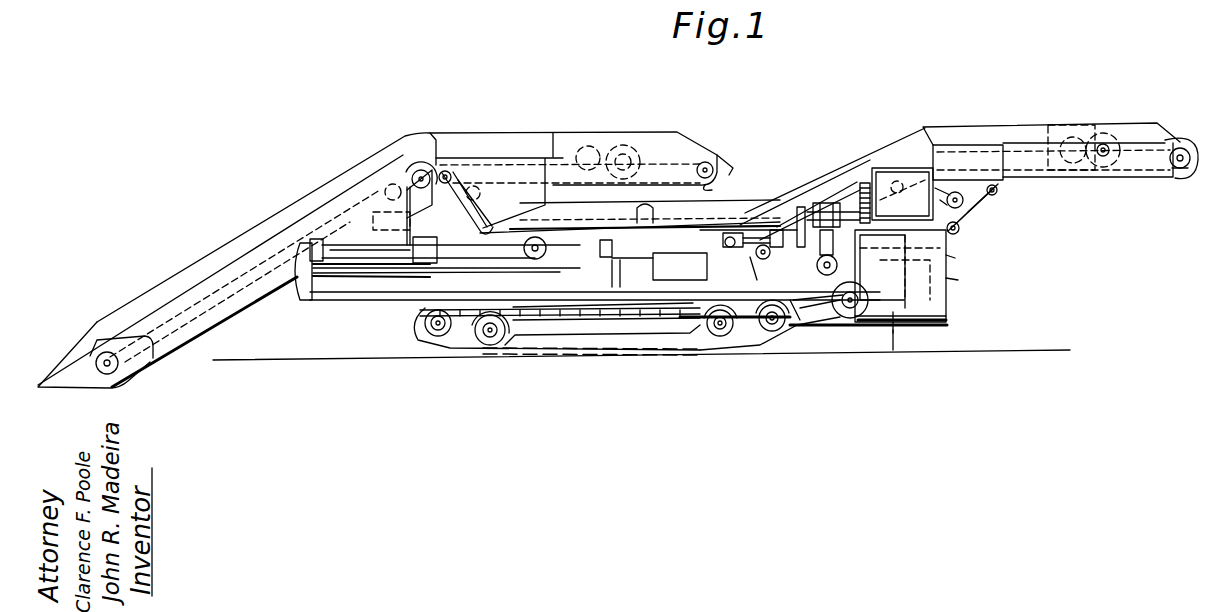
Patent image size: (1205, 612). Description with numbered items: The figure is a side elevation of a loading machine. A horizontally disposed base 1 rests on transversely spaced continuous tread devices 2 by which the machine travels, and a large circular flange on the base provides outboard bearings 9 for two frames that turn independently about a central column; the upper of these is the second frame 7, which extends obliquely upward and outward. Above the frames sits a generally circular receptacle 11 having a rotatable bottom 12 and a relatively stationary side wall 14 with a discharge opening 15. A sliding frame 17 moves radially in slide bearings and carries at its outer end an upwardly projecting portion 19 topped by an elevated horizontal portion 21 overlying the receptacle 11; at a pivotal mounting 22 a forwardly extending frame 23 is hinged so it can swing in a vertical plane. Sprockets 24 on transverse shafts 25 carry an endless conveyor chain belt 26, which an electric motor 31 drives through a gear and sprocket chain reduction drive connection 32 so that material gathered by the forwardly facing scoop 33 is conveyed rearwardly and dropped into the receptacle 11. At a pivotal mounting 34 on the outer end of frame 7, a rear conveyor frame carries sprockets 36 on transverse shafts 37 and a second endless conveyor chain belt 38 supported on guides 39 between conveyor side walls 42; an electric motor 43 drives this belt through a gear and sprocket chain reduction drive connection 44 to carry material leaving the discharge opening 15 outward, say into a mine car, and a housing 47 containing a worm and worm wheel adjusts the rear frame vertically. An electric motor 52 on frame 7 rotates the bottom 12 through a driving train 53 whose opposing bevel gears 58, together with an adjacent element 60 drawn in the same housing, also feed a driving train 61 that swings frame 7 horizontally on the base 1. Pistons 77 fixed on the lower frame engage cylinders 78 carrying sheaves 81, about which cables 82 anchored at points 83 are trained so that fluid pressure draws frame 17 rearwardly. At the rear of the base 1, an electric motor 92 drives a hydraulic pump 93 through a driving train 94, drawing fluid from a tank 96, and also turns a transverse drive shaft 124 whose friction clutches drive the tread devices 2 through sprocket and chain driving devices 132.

The base 1 is at (664, 332).
The continuous tread devices 2 is at (625, 360).
The second frame 7 is at (726, 204).
The outboard bearings 9 is at (790, 318).
The receptacle 11 is at (559, 186).
The bottom 12 is at (551, 228).
The side wall 14 is at (753, 202).
The discharge opening 15 is at (646, 266).
The frame 17 is at (721, 252).
The upwardly projecting portion 19 is at (413, 170).
The elevated horizontal portion 21 is at (532, 164).
The pivotal mounting 22 is at (444, 158).
The forwardly extending frame 23 is at (326, 218).
The sprockets 24 is at (732, 170).
The transverse shafts 25 is at (716, 150).
The endless conveyor chain belt 26 is at (232, 274).
The electric motor 31 is at (591, 144).
The gear and sprocket chain reduction drive connection 32 is at (630, 146).
The scoop 33 is at (64, 352).
The pivotal mounting 34 is at (934, 138).
The sprockets 36 is at (1172, 170).
The transverse shafts 37 is at (754, 255).
The second endless conveyor chain belt 38 is at (857, 184).
The guides 39 is at (1005, 182).
The conveyor side walls 42 is at (802, 190).
The electric motor 43 is at (1079, 134).
The gear and sprocket chain reduction drive connection 44 is at (1110, 138).
The housing 47 is at (985, 226).
The electric motor 52 is at (882, 168).
The driving train 53 is at (840, 200).
The opposing bevel gears 58 is at (860, 242).
The housing partition 60 is at (856, 262).
The driving train 61 is at (900, 318).
The pistons 77 is at (362, 265).
The cylinders 78 is at (419, 271).
The sheaves 81 is at (552, 248).
The cables 82 is at (475, 203).
The cable anchorages 83 is at (444, 232).
The electric motor 92 is at (958, 280).
The hydraulic pump 93 is at (955, 258).
The driving train 94 is at (895, 350).
The tank 96 is at (937, 303).
The transverse drive shaft 124 is at (860, 320).
The sprocket and chain driving devices 132 is at (812, 322).